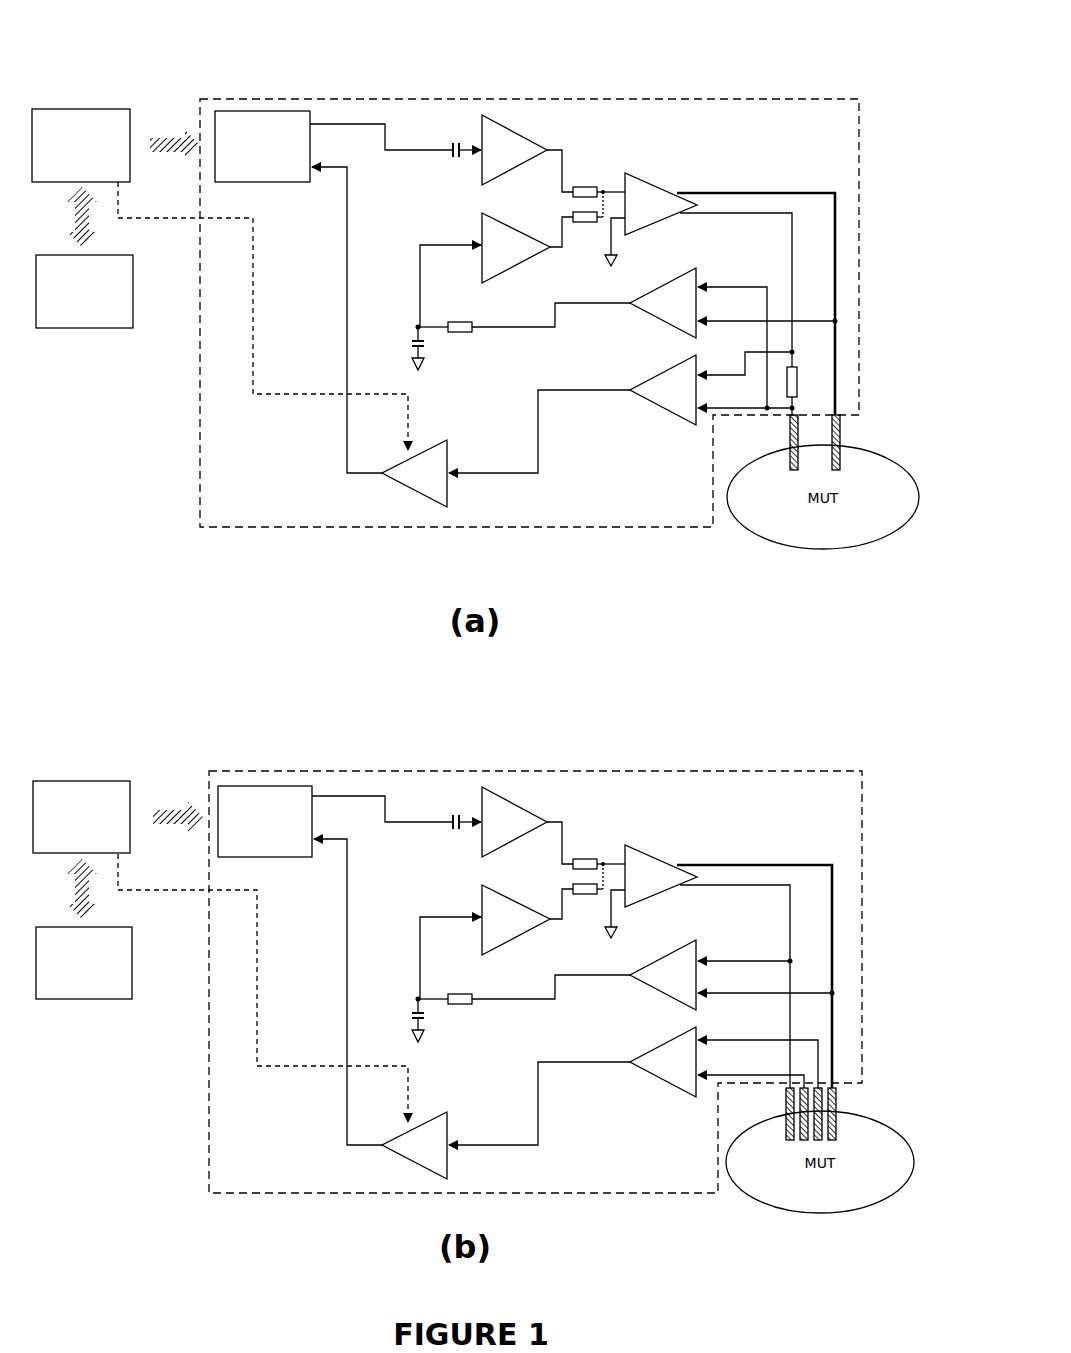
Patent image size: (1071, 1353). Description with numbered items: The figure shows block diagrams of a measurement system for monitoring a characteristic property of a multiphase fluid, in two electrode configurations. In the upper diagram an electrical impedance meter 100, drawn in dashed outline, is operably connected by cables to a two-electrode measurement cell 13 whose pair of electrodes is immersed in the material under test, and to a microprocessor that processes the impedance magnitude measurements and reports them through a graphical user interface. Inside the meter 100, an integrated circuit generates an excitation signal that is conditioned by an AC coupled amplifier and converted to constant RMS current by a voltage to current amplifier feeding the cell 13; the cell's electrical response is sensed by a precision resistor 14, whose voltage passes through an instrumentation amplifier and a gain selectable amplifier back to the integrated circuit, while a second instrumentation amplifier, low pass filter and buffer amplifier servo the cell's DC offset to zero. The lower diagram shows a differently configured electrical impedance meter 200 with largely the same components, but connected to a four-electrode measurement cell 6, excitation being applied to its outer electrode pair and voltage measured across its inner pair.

The four-electrode measurement cell 6 is at (823, 1114).
The two-electrode measurement cell 13 is at (815, 442).
The precision resistor 14 is at (802, 382).
The electrical impedance meter 100 is at (870, 55).
The electrical impedance meter 200 is at (909, 711).